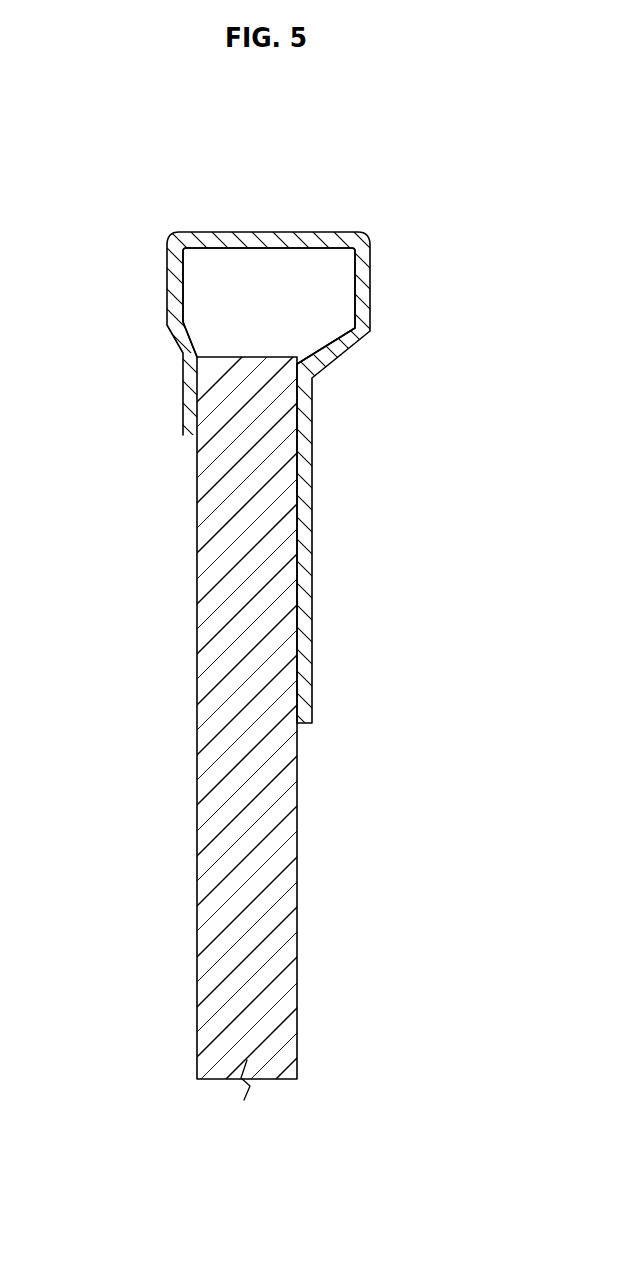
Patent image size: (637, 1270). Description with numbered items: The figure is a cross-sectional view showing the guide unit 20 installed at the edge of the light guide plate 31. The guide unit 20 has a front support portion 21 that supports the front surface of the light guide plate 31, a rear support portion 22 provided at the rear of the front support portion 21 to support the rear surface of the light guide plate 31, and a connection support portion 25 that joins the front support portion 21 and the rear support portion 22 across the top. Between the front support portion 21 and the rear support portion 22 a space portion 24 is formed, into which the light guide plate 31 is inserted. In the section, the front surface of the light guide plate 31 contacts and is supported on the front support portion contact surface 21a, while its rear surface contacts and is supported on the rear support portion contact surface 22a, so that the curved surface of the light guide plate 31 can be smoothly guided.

The guide unit 20 is at (366, 213).
The front support portion 21 is at (168, 334).
The front support portion contact surface 21a is at (198, 400).
The rear support portion 22 is at (370, 329).
The rear support portion contact surface 22a is at (287, 453).
The space portion 24 is at (313, 278).
The connection support portion 25 is at (262, 232).
The light guide plate 31 is at (290, 838).